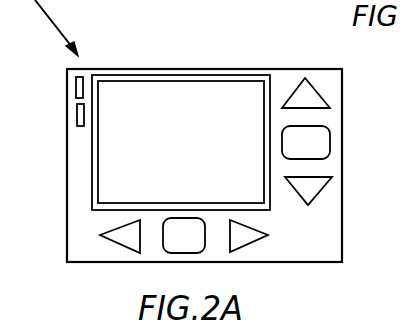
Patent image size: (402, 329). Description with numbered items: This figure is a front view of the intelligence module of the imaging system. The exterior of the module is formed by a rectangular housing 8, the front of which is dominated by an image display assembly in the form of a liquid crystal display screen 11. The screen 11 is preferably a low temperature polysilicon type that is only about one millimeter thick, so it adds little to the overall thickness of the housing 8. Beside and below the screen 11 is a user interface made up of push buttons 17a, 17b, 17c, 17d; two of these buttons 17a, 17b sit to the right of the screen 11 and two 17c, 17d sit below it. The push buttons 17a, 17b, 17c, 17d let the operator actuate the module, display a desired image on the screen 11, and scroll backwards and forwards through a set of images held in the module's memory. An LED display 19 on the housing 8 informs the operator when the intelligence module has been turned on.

The rectangular housing 8 is at (67, 160).
The LCD screen 11 is at (182, 92).
The LED display 19 is at (77, 110).
The push button 17a is at (308, 95).
The push button 17b is at (316, 183).
The push button 17c is at (110, 236).
The push button 17d is at (257, 234).